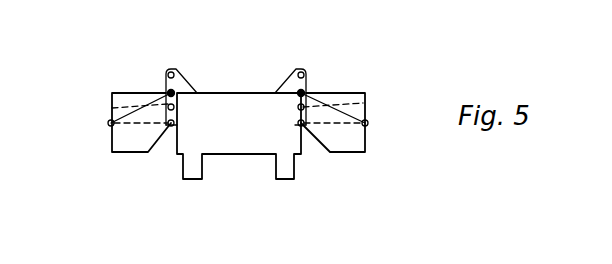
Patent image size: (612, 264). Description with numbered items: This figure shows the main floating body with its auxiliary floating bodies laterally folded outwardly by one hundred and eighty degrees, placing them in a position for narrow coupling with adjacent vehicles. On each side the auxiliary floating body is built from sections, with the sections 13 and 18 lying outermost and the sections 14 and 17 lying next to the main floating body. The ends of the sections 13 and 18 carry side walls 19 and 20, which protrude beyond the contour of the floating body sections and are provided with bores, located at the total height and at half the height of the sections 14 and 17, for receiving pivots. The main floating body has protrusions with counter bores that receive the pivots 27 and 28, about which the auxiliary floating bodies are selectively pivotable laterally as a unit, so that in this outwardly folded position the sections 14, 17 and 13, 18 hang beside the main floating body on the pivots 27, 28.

The section 13 is at (342, 148).
The section 14 is at (367, 102).
The section 17 is at (114, 106).
The section 18 is at (132, 147).
The side wall 19 is at (347, 103).
The side wall 20 is at (140, 98).
The pivot 27 is at (295, 97).
The pivot 28 is at (178, 96).